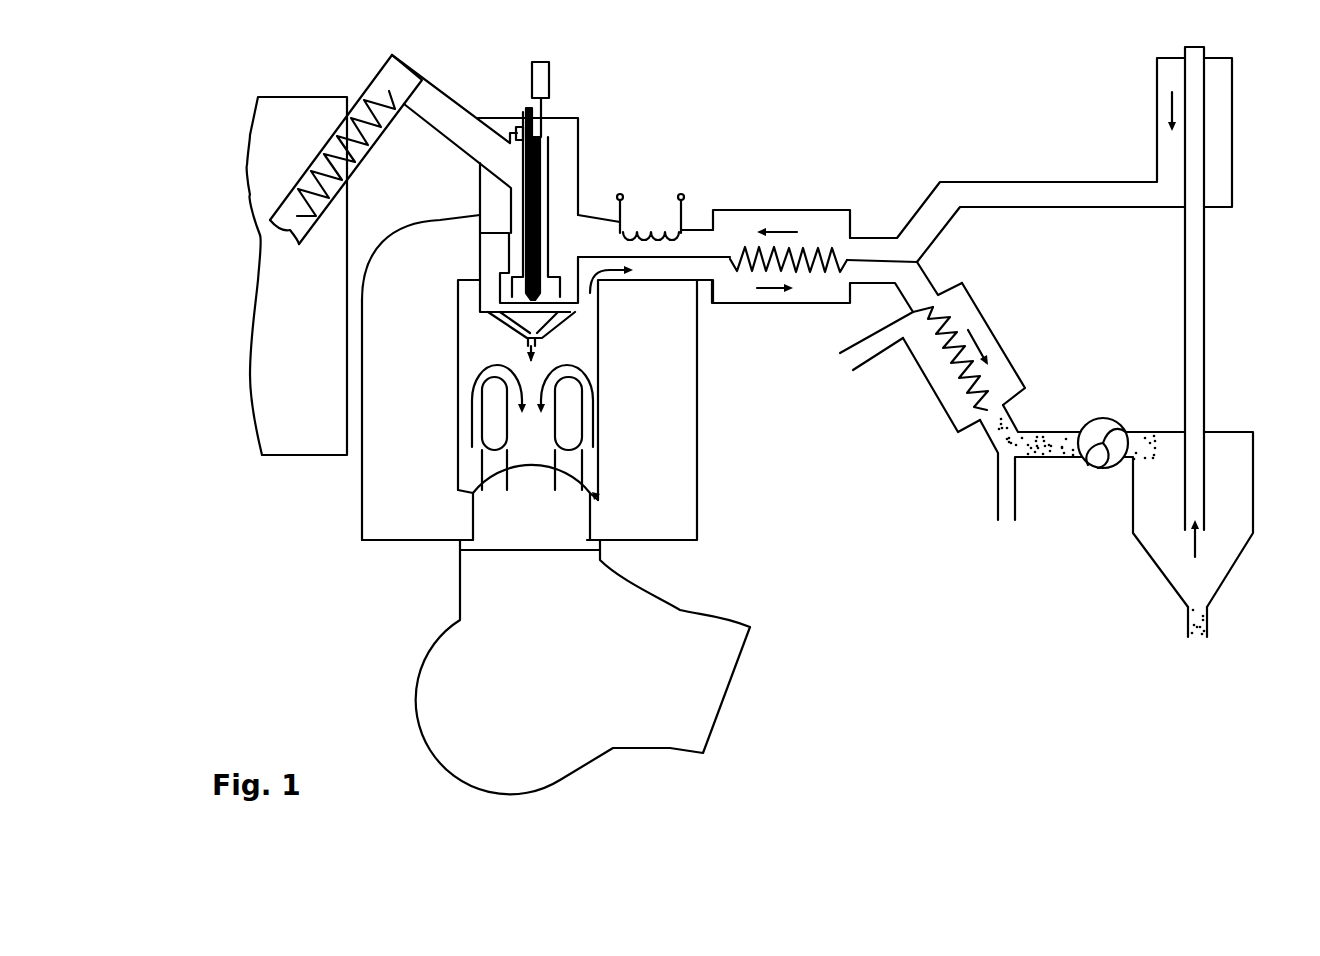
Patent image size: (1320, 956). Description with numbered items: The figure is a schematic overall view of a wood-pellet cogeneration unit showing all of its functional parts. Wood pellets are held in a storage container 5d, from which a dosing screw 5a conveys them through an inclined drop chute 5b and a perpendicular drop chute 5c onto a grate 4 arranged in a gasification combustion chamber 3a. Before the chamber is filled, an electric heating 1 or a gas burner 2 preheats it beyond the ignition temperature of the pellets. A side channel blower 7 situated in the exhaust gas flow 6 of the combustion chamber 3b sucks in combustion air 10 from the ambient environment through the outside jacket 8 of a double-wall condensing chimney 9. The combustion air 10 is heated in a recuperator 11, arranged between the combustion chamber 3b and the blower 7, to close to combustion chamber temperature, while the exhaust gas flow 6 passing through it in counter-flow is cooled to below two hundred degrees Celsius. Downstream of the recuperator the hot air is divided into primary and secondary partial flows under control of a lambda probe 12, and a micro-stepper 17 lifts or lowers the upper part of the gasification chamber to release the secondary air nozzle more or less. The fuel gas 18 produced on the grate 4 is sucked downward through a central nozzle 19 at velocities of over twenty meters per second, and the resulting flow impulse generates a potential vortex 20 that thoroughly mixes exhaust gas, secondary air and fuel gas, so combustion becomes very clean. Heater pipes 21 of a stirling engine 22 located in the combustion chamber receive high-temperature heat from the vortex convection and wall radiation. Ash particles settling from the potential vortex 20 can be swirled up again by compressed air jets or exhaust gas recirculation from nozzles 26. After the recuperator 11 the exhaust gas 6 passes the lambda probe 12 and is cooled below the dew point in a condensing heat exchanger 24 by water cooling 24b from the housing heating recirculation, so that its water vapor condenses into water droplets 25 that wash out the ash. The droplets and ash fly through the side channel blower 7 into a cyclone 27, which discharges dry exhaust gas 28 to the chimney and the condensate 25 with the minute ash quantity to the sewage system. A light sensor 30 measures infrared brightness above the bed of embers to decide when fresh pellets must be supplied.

The electric heating 1 is at (692, 207).
The gas burner 2 is at (505, 322).
The gasification combustion chamber 3a is at (478, 288).
The combustion chamber 3b is at (470, 343).
The grate 4 is at (580, 302).
The dosing screw 5a is at (382, 102).
The inclined drop chute 5b is at (452, 102).
The perpendicular drop chute 5c is at (547, 190).
The storage container 5d is at (267, 353).
The exhaust gas flow 6 is at (600, 287).
The side channel blower 7 is at (1098, 420).
The outside jacket 8 is at (1225, 102).
The double-wall condensing chimney 9 is at (1236, 132).
The combustion air 10 is at (782, 232).
The recuperator 11 is at (755, 207).
The lambda probe 12 is at (934, 278).
The micro-stepper 17 is at (550, 82).
The fuel gas 18 is at (537, 352).
The central nozzle 19 is at (548, 332).
The potential vortex 20 is at (560, 406).
The heater pipes 21 is at (545, 463).
The stirling engine 22 is at (425, 695).
The condensing heat exchanger 24 is at (997, 321).
The water cooling 24b is at (924, 373).
The water droplets 25 is at (1020, 432).
The nozzles 26 is at (600, 497).
The cyclone 27 is at (1143, 510).
The dry exhaust gas 28 is at (1190, 547).
The light sensor 30 is at (518, 126).